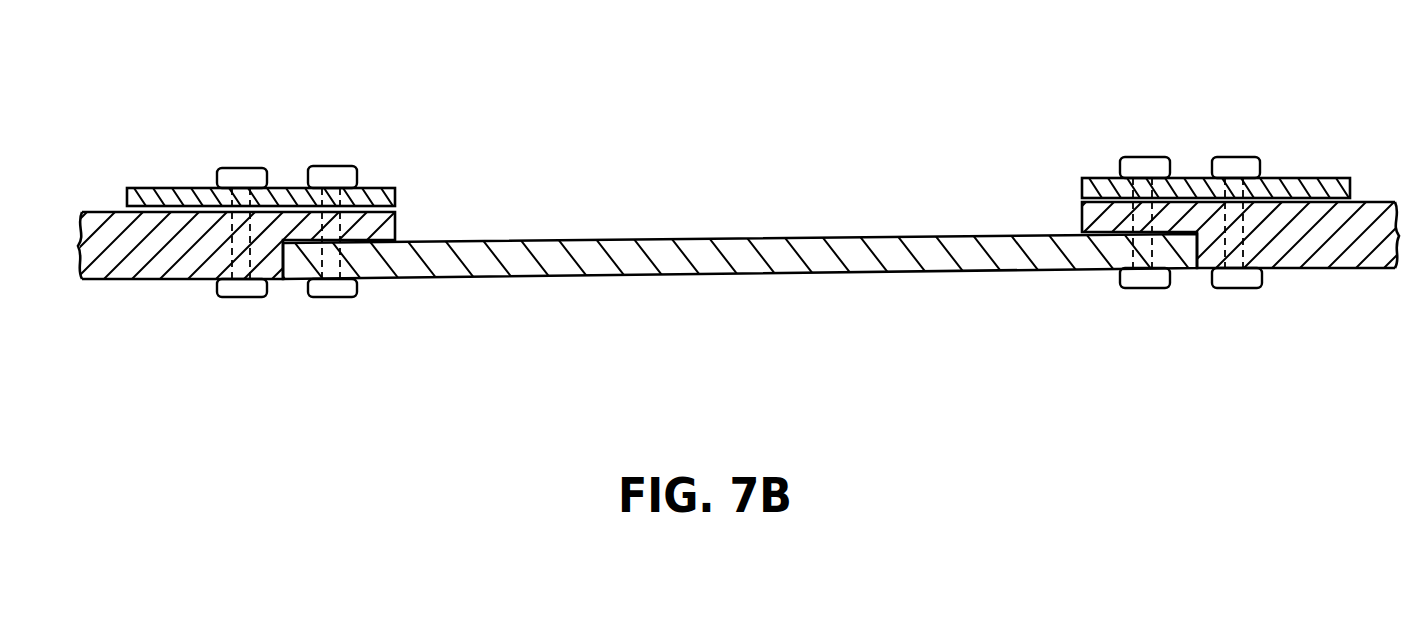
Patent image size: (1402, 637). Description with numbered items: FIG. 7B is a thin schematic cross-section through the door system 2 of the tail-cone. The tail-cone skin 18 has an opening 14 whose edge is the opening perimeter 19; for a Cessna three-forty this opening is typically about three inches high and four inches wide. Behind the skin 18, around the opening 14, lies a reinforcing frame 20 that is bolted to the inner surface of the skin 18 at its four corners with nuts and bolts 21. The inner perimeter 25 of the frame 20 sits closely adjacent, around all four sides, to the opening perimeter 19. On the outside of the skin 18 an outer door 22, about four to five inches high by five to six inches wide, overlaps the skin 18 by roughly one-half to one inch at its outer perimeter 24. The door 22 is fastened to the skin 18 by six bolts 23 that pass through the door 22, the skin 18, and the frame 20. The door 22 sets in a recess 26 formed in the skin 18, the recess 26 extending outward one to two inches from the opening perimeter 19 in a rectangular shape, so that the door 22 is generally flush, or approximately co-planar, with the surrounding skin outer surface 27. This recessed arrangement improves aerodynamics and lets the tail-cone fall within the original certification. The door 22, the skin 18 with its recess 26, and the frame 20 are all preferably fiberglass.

The door system 2 is at (450, 112).
The opening 14 is at (712, 240).
The tail-cone skin 18 is at (263, 297).
The perimeter 19 is at (397, 213).
The reinforcing frame 20 is at (288, 202).
The nuts and bolts 21 is at (240, 297).
The outer door 22 is at (1010, 272).
The bolts 23 is at (353, 291).
The outer perimeter 24 is at (338, 272).
The inner perimeter 25 is at (1082, 188).
The recess 26 is at (337, 278).
The skin outer surface 27 is at (157, 280).